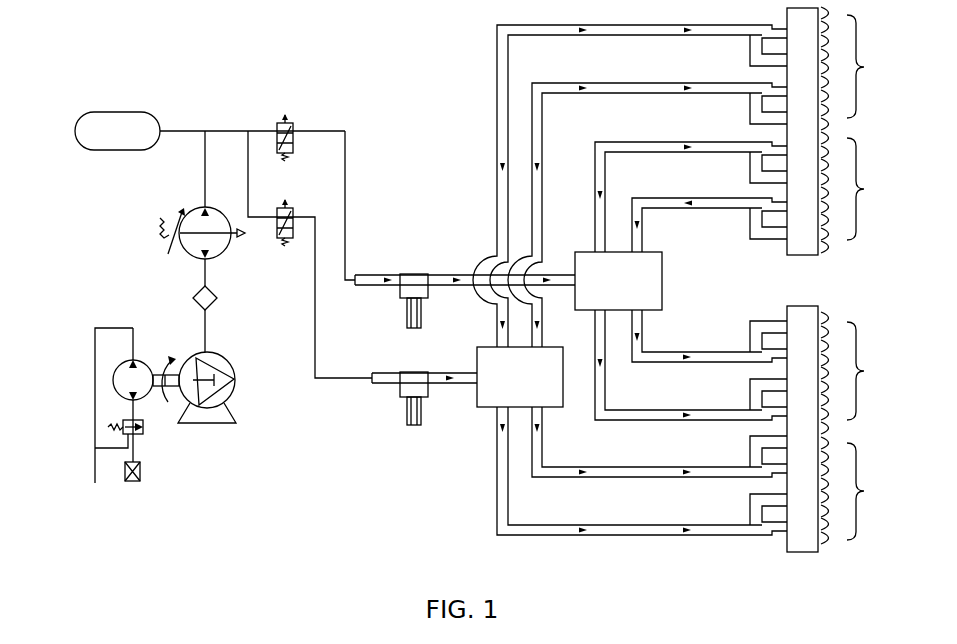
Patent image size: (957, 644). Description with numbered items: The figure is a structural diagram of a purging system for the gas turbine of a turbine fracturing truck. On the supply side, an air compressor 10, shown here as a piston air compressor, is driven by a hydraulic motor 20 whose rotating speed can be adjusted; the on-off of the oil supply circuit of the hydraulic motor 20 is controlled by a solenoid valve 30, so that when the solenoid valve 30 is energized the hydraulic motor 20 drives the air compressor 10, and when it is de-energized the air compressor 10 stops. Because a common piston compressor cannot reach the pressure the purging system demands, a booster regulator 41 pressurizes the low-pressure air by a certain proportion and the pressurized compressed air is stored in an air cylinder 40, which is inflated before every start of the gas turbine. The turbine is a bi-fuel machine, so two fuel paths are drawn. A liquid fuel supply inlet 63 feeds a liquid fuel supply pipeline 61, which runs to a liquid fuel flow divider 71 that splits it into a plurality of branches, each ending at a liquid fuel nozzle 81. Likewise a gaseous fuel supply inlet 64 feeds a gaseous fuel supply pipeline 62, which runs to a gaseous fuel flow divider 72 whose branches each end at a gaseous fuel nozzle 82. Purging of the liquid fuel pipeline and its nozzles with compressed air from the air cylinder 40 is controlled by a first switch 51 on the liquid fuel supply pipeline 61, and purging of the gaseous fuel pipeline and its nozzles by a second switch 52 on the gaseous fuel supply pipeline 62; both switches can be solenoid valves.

The air compressor 10 is at (215, 423).
The hydraulic motor 20 is at (130, 478).
The solenoid valve 30 is at (118, 423).
The air cylinder 40 is at (98, 118).
The booster regulator 41 is at (160, 220).
The first switch 51 is at (288, 127).
The second switch 52 is at (290, 212).
The liquid fuel supply pipeline 61 is at (446, 273).
The gaseous fuel supply pipeline 62 is at (463, 378).
The liquid fuel supply inlet 63 is at (410, 326).
The gaseous fuel supply inlet 64 is at (412, 418).
The liquid fuel flow divider 71 is at (628, 280).
The gaseous fuel flow divider 72 is at (535, 372).
The liquid fuel nozzle 81 is at (862, 283).
The gaseous fuel nozzle 82 is at (862, 275).